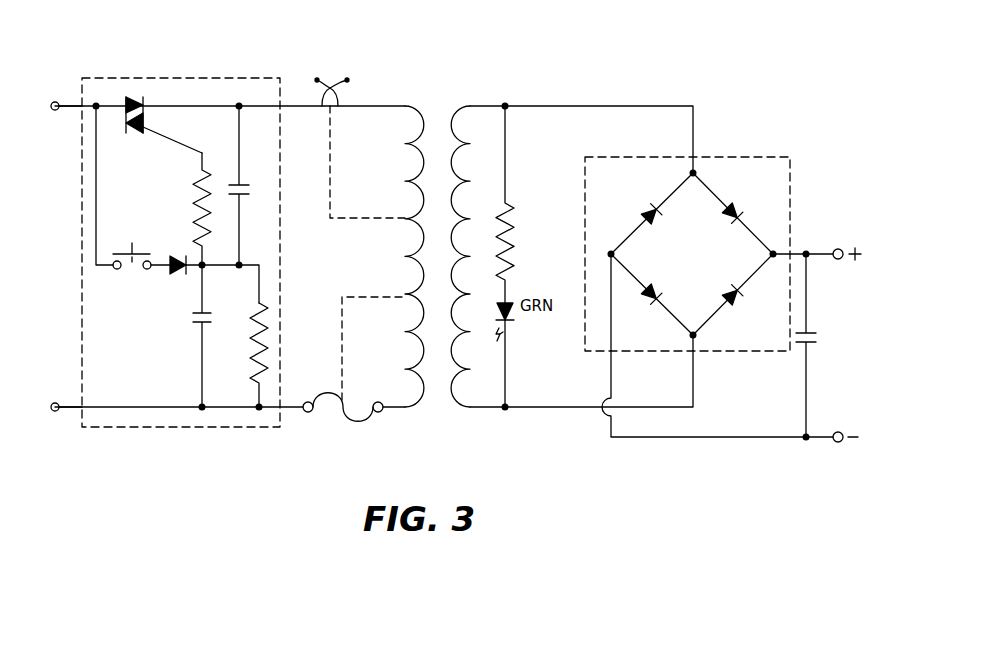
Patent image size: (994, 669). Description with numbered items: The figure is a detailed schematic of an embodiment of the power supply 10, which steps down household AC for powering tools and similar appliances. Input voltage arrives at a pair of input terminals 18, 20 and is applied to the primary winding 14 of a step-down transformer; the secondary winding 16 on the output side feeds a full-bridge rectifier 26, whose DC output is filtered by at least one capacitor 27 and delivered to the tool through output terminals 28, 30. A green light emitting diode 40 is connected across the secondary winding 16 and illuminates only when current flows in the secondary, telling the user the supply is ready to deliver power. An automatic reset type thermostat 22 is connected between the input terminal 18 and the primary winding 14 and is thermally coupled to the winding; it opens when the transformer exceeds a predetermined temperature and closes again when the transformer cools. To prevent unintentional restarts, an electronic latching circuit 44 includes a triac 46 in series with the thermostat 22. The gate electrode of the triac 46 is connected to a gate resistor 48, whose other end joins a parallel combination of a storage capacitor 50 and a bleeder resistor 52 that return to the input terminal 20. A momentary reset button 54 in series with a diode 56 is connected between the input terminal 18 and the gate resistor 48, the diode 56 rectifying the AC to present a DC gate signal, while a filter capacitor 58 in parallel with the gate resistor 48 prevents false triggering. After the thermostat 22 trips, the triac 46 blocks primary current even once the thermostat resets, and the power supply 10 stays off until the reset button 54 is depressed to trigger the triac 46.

The power supply 10 is at (502, 62).
The primary winding 14 is at (409, 409).
The secondary winding 16 is at (458, 407).
The input terminal 18 is at (55, 101).
The input terminal 20 is at (55, 402).
The automatic reset type thermostat 22 is at (322, 78).
The rectifier 26 is at (739, 157).
The capacitor 27 is at (810, 336).
The output terminal 28 is at (835, 249).
The output terminal 30 is at (832, 443).
The green light emitting diode 40 is at (509, 321).
The electronic latching circuit 44 is at (127, 78).
The triac 46 is at (138, 97).
The gate resistor 48 is at (197, 206).
The storage capacitor 50 is at (199, 324).
The bleeder resistor 52 is at (255, 347).
The momentary reset button 54 is at (119, 272).
The diode 56 is at (178, 275).
The filter capacitor 58 is at (242, 186).